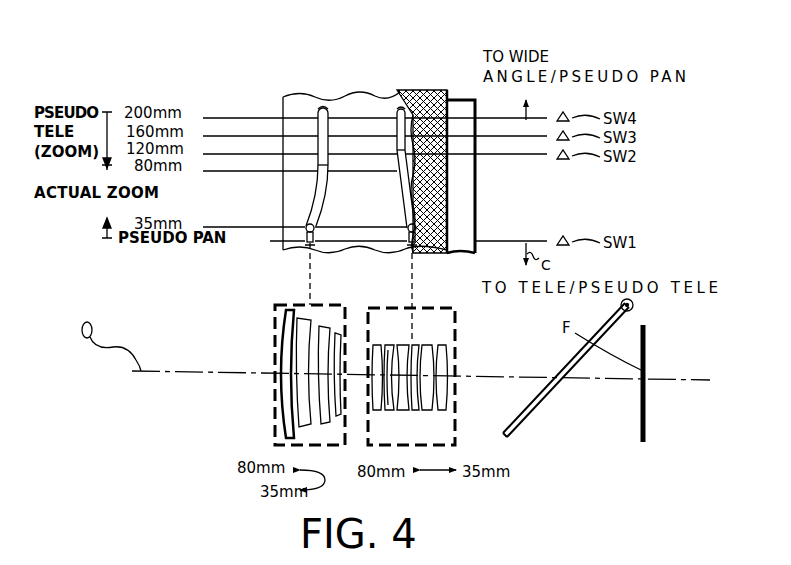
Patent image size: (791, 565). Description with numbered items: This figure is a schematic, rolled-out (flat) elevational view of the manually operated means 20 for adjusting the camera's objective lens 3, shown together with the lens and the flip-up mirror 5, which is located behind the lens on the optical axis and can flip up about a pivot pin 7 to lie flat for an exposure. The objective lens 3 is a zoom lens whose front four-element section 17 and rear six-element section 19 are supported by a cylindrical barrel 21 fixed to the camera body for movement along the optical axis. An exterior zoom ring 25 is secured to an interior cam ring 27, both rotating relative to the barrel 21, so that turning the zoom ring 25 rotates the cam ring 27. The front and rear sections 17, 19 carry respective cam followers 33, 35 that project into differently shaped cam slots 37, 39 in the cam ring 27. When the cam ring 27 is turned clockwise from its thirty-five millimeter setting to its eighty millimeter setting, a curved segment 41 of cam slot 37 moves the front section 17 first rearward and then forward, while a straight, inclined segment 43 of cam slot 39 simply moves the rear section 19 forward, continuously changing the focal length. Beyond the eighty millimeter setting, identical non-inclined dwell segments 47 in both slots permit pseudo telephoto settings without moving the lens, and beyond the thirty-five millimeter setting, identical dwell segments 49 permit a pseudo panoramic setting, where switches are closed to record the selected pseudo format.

The manually operated means 20 is at (278, 99).
The cam ring 27 is at (347, 95).
The zoom ring 25 is at (430, 90).
The cylindrical barrel 21 is at (465, 108).
The dwell segments 47 is at (397, 124).
The cam slot 39 is at (398, 156).
The cam slot 37 is at (327, 164).
The curved segment 41 is at (323, 188).
The straight, inclined segment 43 is at (405, 198).
The cam follower 33 is at (307, 225).
The cam follower 35 is at (409, 226).
The dwell segments 49 is at (410, 252).
The objective lens 3 is at (272, 327).
The front four-element section 17 is at (277, 433).
The rear six-element section 19 is at (456, 430).
The flip-up mirror 5 is at (548, 400).
The pivot pin 7 is at (634, 306).